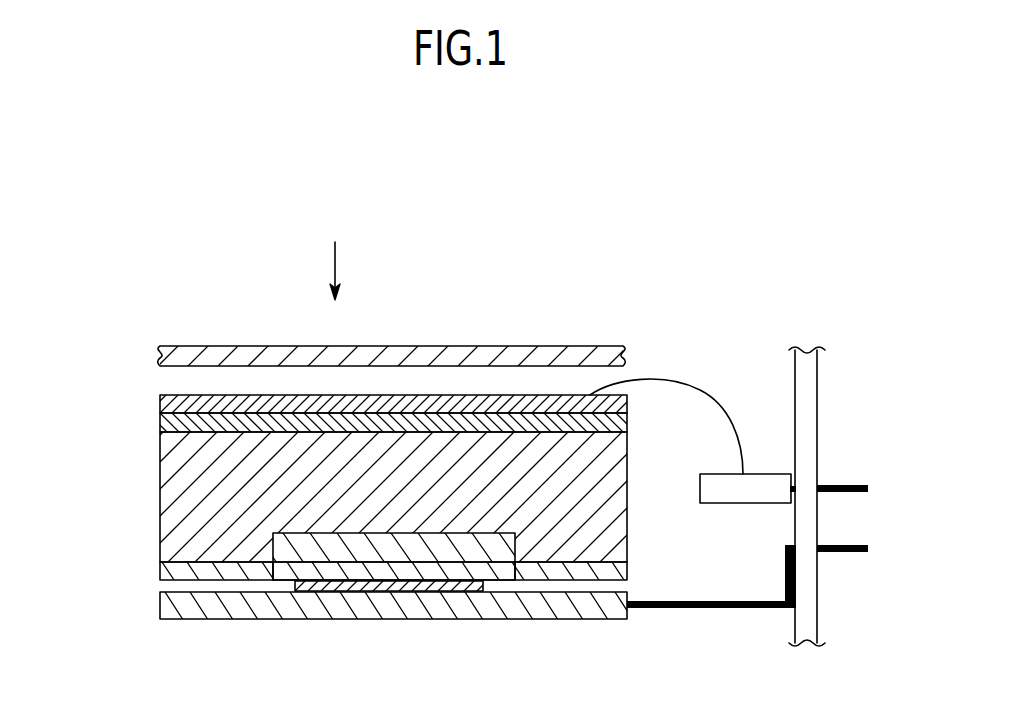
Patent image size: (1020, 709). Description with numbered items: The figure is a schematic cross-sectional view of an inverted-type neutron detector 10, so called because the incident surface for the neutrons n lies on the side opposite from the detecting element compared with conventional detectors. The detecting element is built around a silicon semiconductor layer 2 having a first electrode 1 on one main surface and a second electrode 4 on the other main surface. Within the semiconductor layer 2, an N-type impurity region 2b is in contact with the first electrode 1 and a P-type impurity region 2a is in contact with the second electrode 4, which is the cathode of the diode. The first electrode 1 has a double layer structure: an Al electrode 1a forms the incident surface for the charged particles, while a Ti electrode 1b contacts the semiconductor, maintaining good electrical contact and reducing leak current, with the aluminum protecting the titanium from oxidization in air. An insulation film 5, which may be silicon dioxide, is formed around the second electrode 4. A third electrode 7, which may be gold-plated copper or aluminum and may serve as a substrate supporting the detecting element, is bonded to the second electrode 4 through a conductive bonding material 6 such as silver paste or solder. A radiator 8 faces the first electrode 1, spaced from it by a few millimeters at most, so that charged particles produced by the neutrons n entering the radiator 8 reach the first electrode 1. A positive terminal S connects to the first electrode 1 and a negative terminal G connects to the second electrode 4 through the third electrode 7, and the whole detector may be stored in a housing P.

The neutron detector 10 is at (451, 289).
The first electrode 1 is at (332, 390).
The Al electrode 1a is at (160, 395).
The Ti electrode 1b is at (160, 432).
The Si semiconductor layer 2 is at (393, 506).
The P-type impurity region 2a is at (273, 540).
The N-type impurity region 2b is at (160, 473).
The second electrode 4 is at (507, 569).
The insulation film 5 is at (160, 568).
The conductive bonding material 6 is at (308, 585).
The third electrode 7 is at (192, 612).
The radiator 8 is at (575, 346).
The neutrons n is at (336, 250).
The housing P is at (810, 381).
The positive terminal S is at (840, 487).
The negative terminal G is at (852, 545).